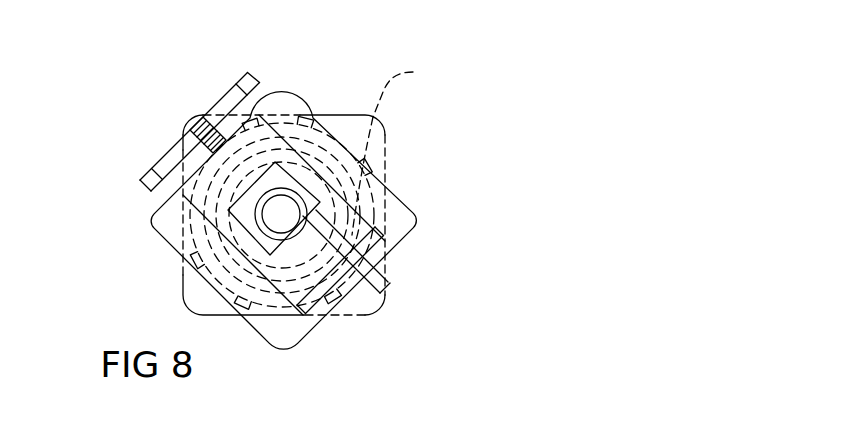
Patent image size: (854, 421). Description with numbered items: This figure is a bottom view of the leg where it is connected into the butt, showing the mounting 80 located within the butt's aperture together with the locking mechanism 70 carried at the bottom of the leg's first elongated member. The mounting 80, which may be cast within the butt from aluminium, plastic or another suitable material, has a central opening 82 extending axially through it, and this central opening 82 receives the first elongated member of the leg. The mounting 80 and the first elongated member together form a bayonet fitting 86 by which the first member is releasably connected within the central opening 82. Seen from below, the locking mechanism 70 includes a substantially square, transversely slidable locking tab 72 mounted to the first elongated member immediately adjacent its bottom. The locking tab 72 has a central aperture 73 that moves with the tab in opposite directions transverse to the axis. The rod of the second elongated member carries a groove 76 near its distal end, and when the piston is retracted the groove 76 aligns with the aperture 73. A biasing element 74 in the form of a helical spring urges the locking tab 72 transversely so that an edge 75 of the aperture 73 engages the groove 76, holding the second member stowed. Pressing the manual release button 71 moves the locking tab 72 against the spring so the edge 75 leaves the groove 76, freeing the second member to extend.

The locking mechanism 70 is at (150, 218).
The manual release button 71 is at (146, 177).
The locking tab 72 is at (287, 258).
The central aperture 73 is at (287, 170).
The biasing element 74 is at (198, 118).
The edge 75 is at (333, 217).
The groove 76 is at (323, 210).
The mounting 80 is at (388, 137).
The central opening 82 is at (400, 146).
The bayonet fitting 86 is at (188, 268).